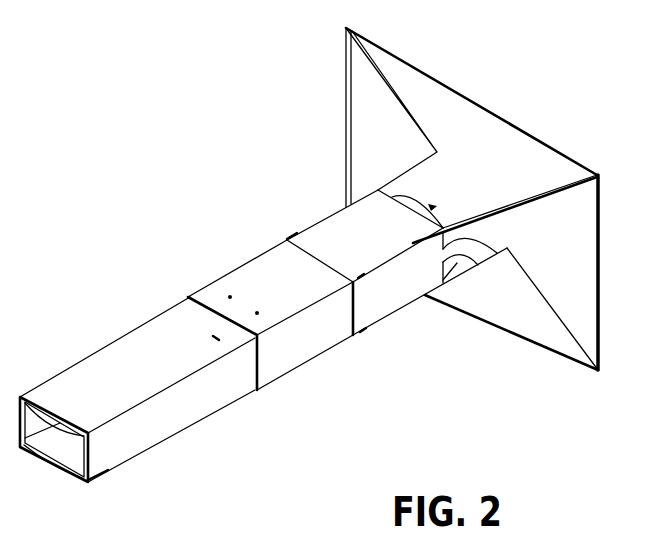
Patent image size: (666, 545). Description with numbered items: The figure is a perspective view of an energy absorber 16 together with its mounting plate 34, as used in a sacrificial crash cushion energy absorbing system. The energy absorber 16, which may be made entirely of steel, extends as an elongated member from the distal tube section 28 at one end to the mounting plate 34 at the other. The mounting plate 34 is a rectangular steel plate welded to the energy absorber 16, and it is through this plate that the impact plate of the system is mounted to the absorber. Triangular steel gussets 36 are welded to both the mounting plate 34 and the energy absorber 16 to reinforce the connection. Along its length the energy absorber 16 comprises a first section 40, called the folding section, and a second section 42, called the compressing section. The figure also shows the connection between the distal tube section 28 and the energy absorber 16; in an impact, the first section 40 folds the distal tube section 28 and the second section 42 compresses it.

The energy absorber 16 is at (263, 329).
The distal tube section 28 is at (113, 357).
The mounting plate 34 is at (603, 204).
The gusset 36 is at (387, 117).
The first section 40 is at (325, 398).
The second section 42 is at (426, 328).